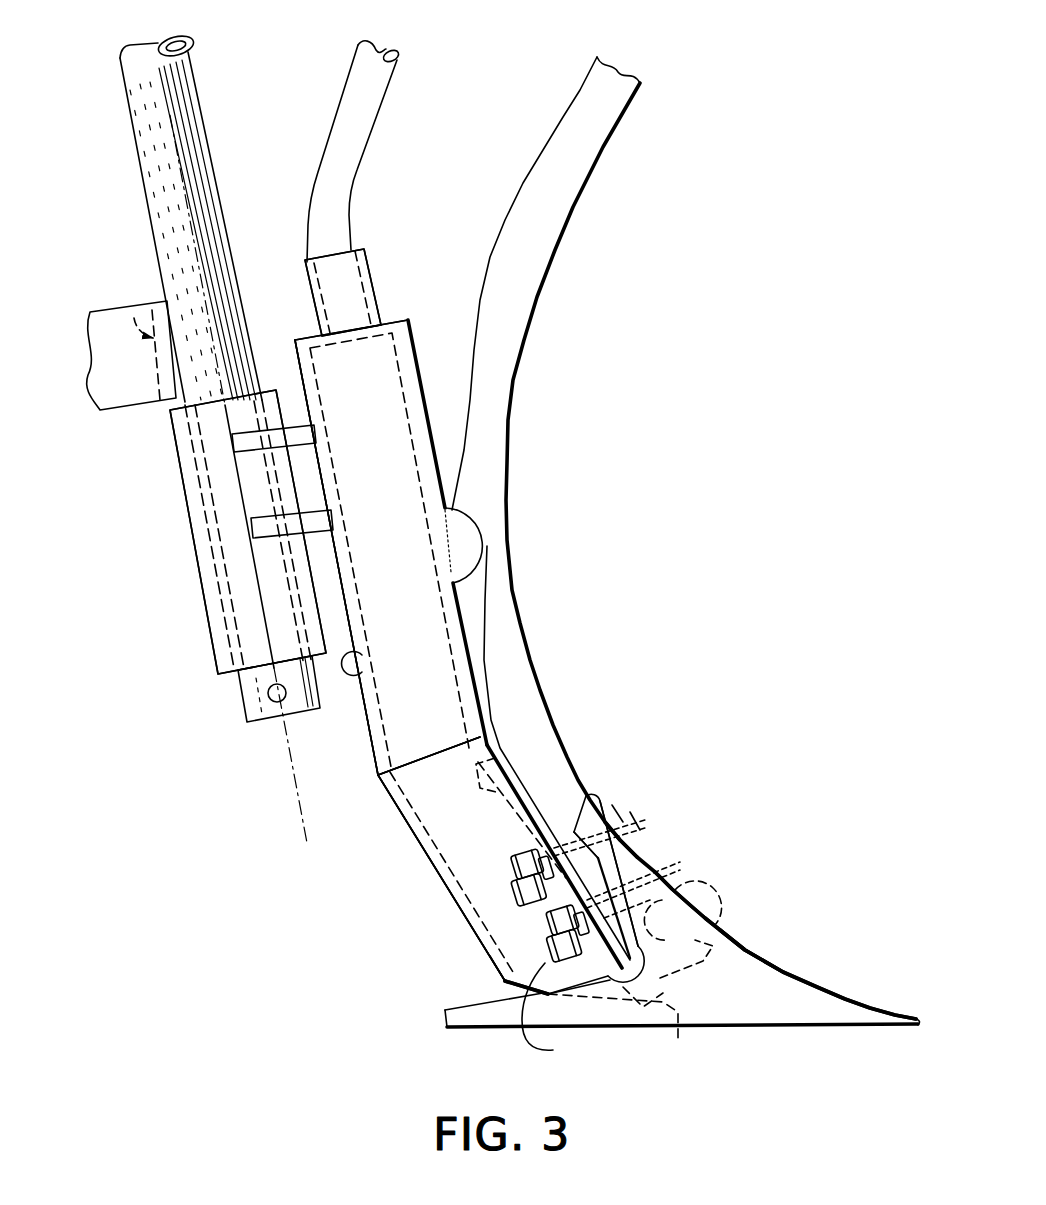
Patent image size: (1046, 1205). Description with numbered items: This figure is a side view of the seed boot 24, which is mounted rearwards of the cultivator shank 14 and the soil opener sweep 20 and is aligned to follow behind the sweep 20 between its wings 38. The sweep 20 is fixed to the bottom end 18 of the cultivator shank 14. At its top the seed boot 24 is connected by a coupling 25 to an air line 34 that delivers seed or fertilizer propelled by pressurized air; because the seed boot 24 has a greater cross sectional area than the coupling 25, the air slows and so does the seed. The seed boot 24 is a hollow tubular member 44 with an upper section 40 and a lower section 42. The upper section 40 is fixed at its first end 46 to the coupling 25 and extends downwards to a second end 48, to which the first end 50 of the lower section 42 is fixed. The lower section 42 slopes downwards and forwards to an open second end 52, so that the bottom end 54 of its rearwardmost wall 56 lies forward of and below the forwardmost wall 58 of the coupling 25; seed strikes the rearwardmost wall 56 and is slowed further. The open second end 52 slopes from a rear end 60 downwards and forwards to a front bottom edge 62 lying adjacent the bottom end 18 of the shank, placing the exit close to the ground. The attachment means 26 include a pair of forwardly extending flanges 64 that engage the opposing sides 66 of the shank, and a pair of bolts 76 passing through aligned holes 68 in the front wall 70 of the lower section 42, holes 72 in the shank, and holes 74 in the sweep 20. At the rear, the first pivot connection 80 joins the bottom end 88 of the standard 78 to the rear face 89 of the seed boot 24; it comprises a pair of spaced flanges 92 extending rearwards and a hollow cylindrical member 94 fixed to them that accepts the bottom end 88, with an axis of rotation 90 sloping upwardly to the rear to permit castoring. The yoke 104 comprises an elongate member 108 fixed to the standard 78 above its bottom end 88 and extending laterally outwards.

The cultivator shank 14 is at (512, 455).
The bottom end 18 is at (760, 958).
The soil opener sweep 20 is at (820, 975).
The seed boot 24 is at (376, 814).
The coupling 25 is at (300, 278).
The attachment means 26 is at (702, 831).
The air line 34 is at (378, 129).
The wings 38 is at (440, 1021).
The upper section 40 is at (378, 360).
The lower section 42 is at (455, 897).
The hollow tubular member 44 is at (362, 718).
The first end 46 is at (394, 312).
The second end 48 is at (430, 750).
The first end 50 is at (434, 761).
The open second end 52 is at (555, 1014).
The bottom end 54 is at (482, 968).
The rearwardmost wall 56 is at (442, 884).
The forwardmost wall 58 is at (376, 262).
The rear end 60 is at (504, 988).
The front bottom edge 62 is at (680, 1038).
The forwardly extending flanges 64 is at (484, 524).
The opposing sides 66 is at (496, 391).
The holes 68 is at (536, 848).
The front wall 70 is at (502, 762).
The holes 72 is at (562, 843).
The holes 74 is at (604, 798).
The bolts 76 is at (627, 826).
The standard 78 is at (208, 101).
The first pivot connection 80 is at (198, 586).
The bottom end 88 is at (244, 708).
The rear face 89 is at (362, 664).
The axis of rotation 90 is at (186, 236).
The flanges 92 is at (295, 418).
The hollow cylindrical member 94 is at (190, 528).
The yoke 104 is at (137, 413).
The elongate member 108 is at (134, 318).